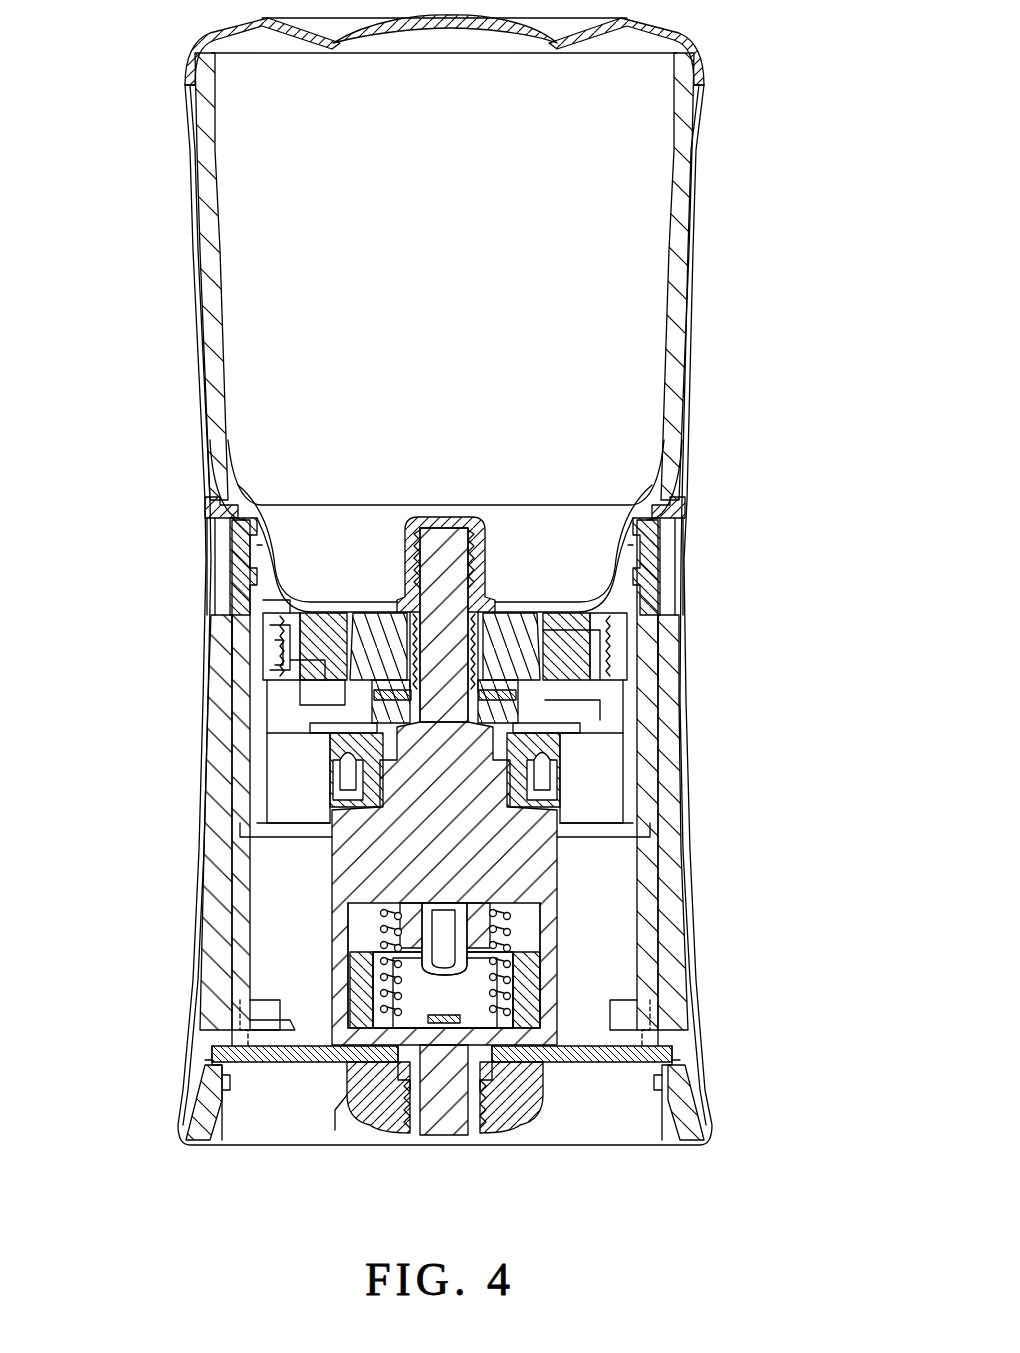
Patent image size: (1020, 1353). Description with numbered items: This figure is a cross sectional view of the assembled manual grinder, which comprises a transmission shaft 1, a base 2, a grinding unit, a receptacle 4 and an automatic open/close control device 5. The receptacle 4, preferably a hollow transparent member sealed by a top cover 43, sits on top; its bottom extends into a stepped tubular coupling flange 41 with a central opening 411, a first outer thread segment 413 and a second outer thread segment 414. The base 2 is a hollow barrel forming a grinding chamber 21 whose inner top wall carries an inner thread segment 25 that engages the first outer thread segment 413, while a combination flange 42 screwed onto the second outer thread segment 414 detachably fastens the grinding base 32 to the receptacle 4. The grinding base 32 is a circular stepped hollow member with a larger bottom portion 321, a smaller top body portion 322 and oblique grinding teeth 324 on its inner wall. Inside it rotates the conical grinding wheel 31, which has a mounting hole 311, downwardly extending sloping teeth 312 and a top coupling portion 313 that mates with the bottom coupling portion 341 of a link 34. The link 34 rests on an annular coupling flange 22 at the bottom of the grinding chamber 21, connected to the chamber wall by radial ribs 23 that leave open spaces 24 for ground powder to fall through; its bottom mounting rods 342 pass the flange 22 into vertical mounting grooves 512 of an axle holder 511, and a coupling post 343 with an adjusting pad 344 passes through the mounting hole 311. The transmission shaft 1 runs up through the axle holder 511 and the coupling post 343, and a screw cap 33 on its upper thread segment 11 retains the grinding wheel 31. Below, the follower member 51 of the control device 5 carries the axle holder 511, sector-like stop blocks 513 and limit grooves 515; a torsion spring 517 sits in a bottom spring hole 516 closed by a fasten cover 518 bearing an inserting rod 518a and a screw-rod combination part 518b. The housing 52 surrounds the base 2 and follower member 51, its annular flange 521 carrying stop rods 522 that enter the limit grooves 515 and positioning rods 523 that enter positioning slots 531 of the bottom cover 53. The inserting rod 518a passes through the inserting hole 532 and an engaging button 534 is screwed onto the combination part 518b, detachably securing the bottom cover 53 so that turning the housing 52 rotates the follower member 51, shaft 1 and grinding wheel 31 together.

The transmission shaft 1 is at (347, 510).
The thread segment 11 is at (420, 588).
The base 2 is at (680, 800).
The grinding chamber 21 is at (690, 738).
The annular coupling flange 22 is at (340, 810).
The radial ribs 23 is at (662, 860).
The open spaces 24 is at (675, 825).
The inner thread segment 25 is at (685, 565).
The grinding wheel 31 is at (365, 645).
The mounting hole 311 is at (272, 615).
The sloping teeth 312 is at (345, 705).
The top coupling portion 313 is at (690, 722).
The grinding base 32 is at (655, 616).
The bottom portion 321 is at (285, 670).
The top body portion 322 is at (242, 608).
The oblique grinding teeth 324 is at (255, 650).
The screw cap 33 is at (684, 503).
The link 34 is at (680, 760).
The bottom coupling portion 341 is at (330, 760).
The bottom mounting rods 342 is at (348, 782).
The coupling post 343 is at (700, 672).
The pad 344 is at (690, 707).
The receptacle 4 is at (496, 580).
The tubular coupling flange 41 is at (690, 587).
The opening 411 is at (300, 556).
The first outer thread segment 413 is at (690, 550).
The second outer thread segment 414 is at (690, 662).
The combination flange 42 is at (690, 700).
The top cover 43 is at (652, 28).
The automatic open/close control device 5 is at (147, 888).
The follower member 51 is at (680, 940).
The axle holder 511 is at (335, 940).
The vertical mounting grooves 512 is at (330, 870).
The stop blocks 513 is at (270, 1030).
The limit groove 515 is at (268, 1050).
The bottom spring hole 516 is at (360, 950).
The torsion spring 517 is at (390, 985).
The fasten cover 518 is at (660, 980).
The inserting rod 518a is at (355, 1085).
The combination part 518b is at (435, 1110).
The housing 52 is at (680, 915).
The annular flange 521 is at (680, 1037).
The stop rod 522 is at (690, 1012).
The positioning rod 523 is at (682, 1076).
The bottom cover 53 is at (690, 1100).
The positioning slots 531 is at (690, 1050).
The inserting hole 532 is at (395, 1105).
The engaging button 534 is at (515, 1105).